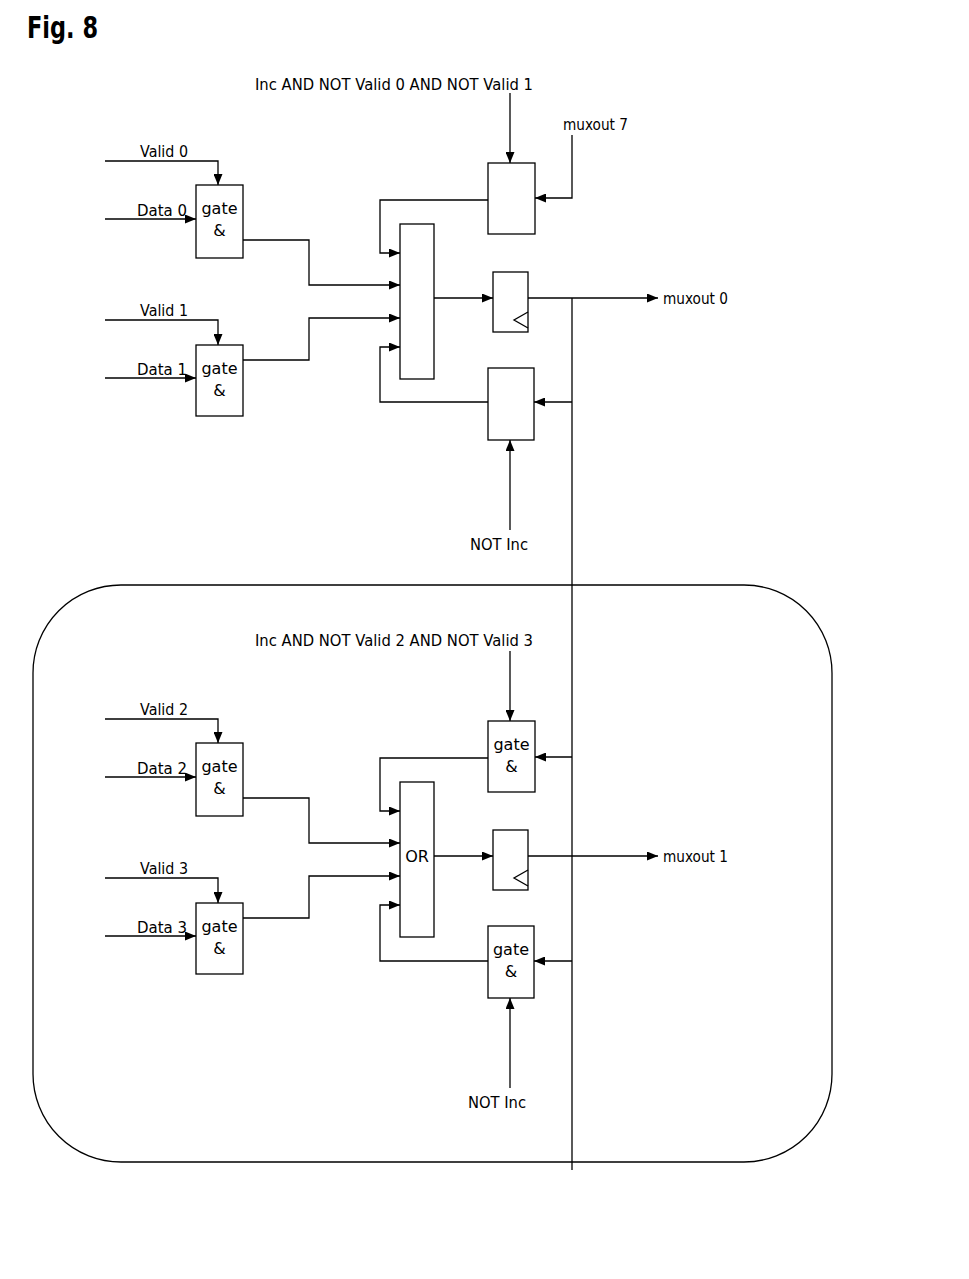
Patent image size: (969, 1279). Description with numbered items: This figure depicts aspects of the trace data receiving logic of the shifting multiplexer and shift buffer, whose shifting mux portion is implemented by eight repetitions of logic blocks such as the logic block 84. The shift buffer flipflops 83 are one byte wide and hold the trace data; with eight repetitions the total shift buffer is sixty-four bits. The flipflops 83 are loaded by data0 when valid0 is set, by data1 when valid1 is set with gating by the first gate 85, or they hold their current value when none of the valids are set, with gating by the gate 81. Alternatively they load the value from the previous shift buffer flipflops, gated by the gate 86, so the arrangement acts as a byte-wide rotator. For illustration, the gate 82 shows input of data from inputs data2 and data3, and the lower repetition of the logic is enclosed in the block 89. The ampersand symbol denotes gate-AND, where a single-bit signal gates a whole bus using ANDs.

The gate 81 is at (466, 173).
The gate 82 is at (476, 438).
The shift buffer flipflops 83 is at (429, 301).
The logic block 84 is at (494, 300).
The first gate 85 is at (321, 247).
The gate 86 is at (321, 339).
The second multiplexer stage block 89 is at (432, 873).